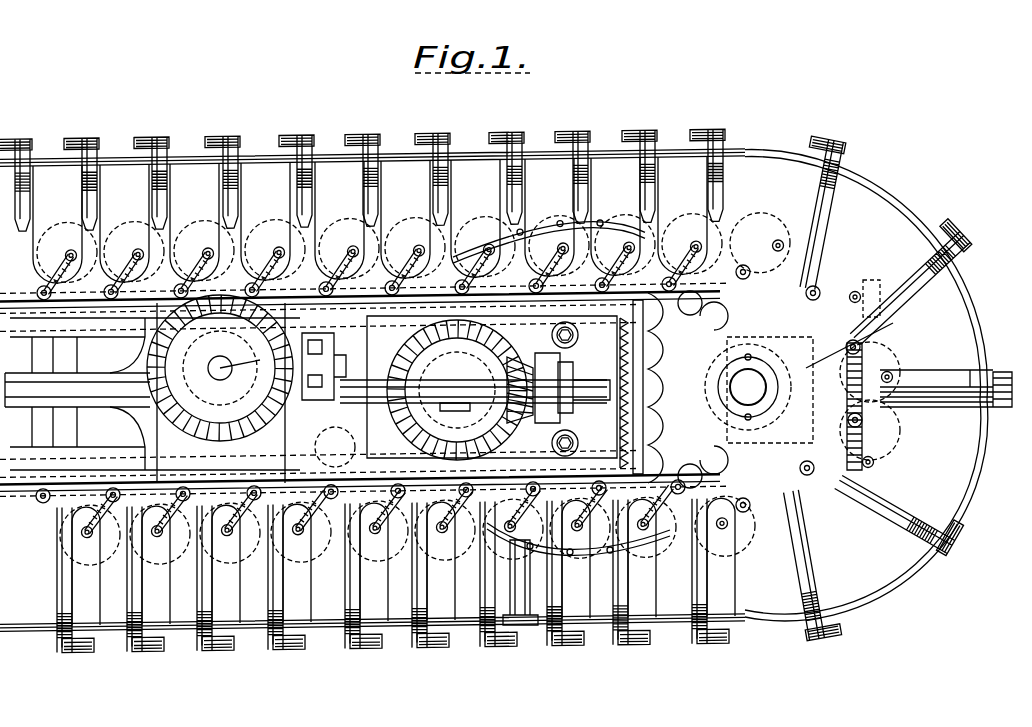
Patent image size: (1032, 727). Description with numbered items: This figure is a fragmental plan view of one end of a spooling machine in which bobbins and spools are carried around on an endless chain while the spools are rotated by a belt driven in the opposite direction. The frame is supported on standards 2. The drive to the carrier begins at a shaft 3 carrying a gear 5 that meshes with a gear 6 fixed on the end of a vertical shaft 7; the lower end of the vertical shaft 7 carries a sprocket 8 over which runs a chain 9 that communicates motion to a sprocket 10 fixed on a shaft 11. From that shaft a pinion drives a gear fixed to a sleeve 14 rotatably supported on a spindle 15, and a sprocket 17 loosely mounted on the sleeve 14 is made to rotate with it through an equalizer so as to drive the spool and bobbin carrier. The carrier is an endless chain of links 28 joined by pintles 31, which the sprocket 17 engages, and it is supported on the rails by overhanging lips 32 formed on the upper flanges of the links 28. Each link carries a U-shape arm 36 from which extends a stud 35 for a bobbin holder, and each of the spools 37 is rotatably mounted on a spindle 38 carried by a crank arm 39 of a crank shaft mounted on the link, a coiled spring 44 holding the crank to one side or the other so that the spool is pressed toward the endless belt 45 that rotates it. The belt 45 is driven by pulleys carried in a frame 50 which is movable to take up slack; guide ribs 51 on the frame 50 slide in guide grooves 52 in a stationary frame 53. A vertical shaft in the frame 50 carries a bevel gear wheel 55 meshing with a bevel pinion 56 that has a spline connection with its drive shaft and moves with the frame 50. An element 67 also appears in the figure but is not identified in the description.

The standards 2 is at (845, 294).
The shaft 3 is at (364, 362).
The gear 5 is at (264, 366).
The gear 6 is at (134, 370).
The vertical shaft 7 is at (228, 363).
The sprocket 8 is at (220, 368).
The chain 9 is at (572, 548).
The sprocket 10 is at (473, 401).
The shaft 11 is at (711, 388).
The sleeve 14 is at (713, 376).
The spindle 15 is at (730, 390).
The sprocket 17 is at (718, 356).
The links 28 is at (504, 390).
The pintles 31 is at (150, 387).
The overhanging lips 32 is at (721, 389).
The stud 35 is at (949, 224).
The U-shape arm 36 is at (899, 274).
The spools 37 is at (493, 389).
The spindle 38 is at (882, 243).
The crank arm 39 is at (43, 520).
The coiled spring 44 is at (505, 290).
The endless belt 45 is at (458, 405).
The frame 50 is at (335, 433).
The guide ribs 51 is at (465, 389).
The guide grooves 52 is at (350, 350).
The stationary frame 53 is at (551, 539).
The bevel gear wheel 55 is at (457, 390).
The bevel pinion 56 is at (554, 442).
The nut 67 is at (560, 333).